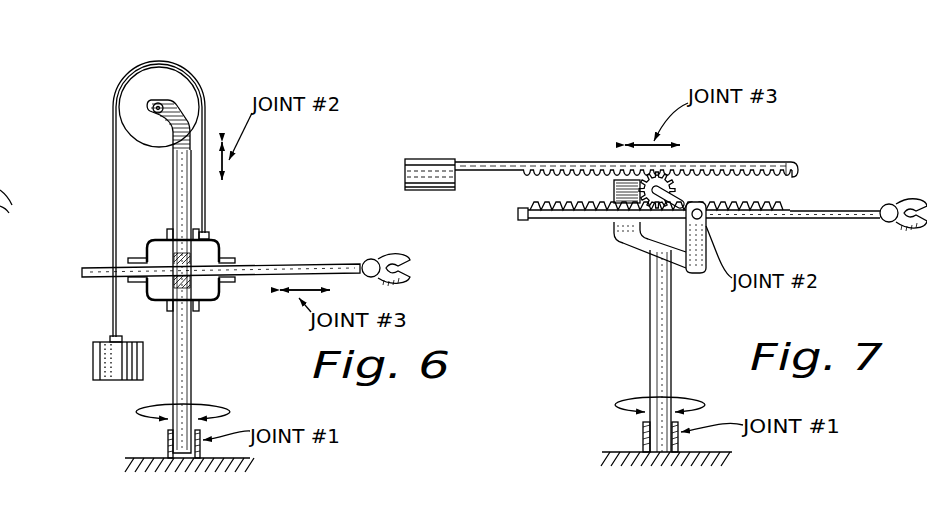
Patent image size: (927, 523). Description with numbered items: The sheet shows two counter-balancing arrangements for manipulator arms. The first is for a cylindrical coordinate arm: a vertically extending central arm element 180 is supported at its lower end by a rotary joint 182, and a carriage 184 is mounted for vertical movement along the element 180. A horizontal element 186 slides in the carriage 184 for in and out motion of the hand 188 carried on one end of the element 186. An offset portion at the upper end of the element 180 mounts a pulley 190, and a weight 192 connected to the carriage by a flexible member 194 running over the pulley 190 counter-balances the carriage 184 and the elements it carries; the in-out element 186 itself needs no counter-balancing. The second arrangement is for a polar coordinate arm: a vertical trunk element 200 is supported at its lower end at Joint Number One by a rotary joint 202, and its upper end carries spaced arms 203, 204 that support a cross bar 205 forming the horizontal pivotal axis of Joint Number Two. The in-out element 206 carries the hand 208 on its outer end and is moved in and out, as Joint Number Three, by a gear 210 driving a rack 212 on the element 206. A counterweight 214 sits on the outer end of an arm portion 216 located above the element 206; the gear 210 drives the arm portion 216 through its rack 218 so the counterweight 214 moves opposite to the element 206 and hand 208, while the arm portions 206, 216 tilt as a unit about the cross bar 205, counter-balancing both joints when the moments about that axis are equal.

In FIG. 6, the central arm element 180 is at (192, 366).
In FIG. 6, the rotary joint 182 is at (168, 445).
In FIG. 6, the carriage 184 is at (220, 245).
In FIG. 6, the horizontal element 186 is at (287, 264).
In FIG. 6, the hand 188 is at (175, 104).
In FIG. 6, the pulley 190 is at (130, 96).
In FIG. 6, the weight 192 is at (93, 362).
In FIG. 6, the flexible member 194 is at (114, 177).
In FIG. 7, the trunk element 200 is at (650, 358).
In FIG. 7, the rotary joint 202 is at (643, 437).
In FIG. 7, the spaced arm 203 is at (613, 194).
In FIG. 7, the spaced arm 204 is at (700, 246).
In FIG. 7, the cross bar 205 is at (673, 194).
In FIG. 7, the in-out element 206 is at (856, 219).
In FIG. 7, the hand 208 is at (881, 206).
In FIG. 7, the gear 210 is at (681, 185).
In FIG. 7, the rack 212 is at (600, 205).
In FIG. 7, the counterweight 214 is at (426, 160).
In FIG. 7, the arm portion 216 is at (492, 161).
In FIG. 7, the rack 218 is at (791, 183).